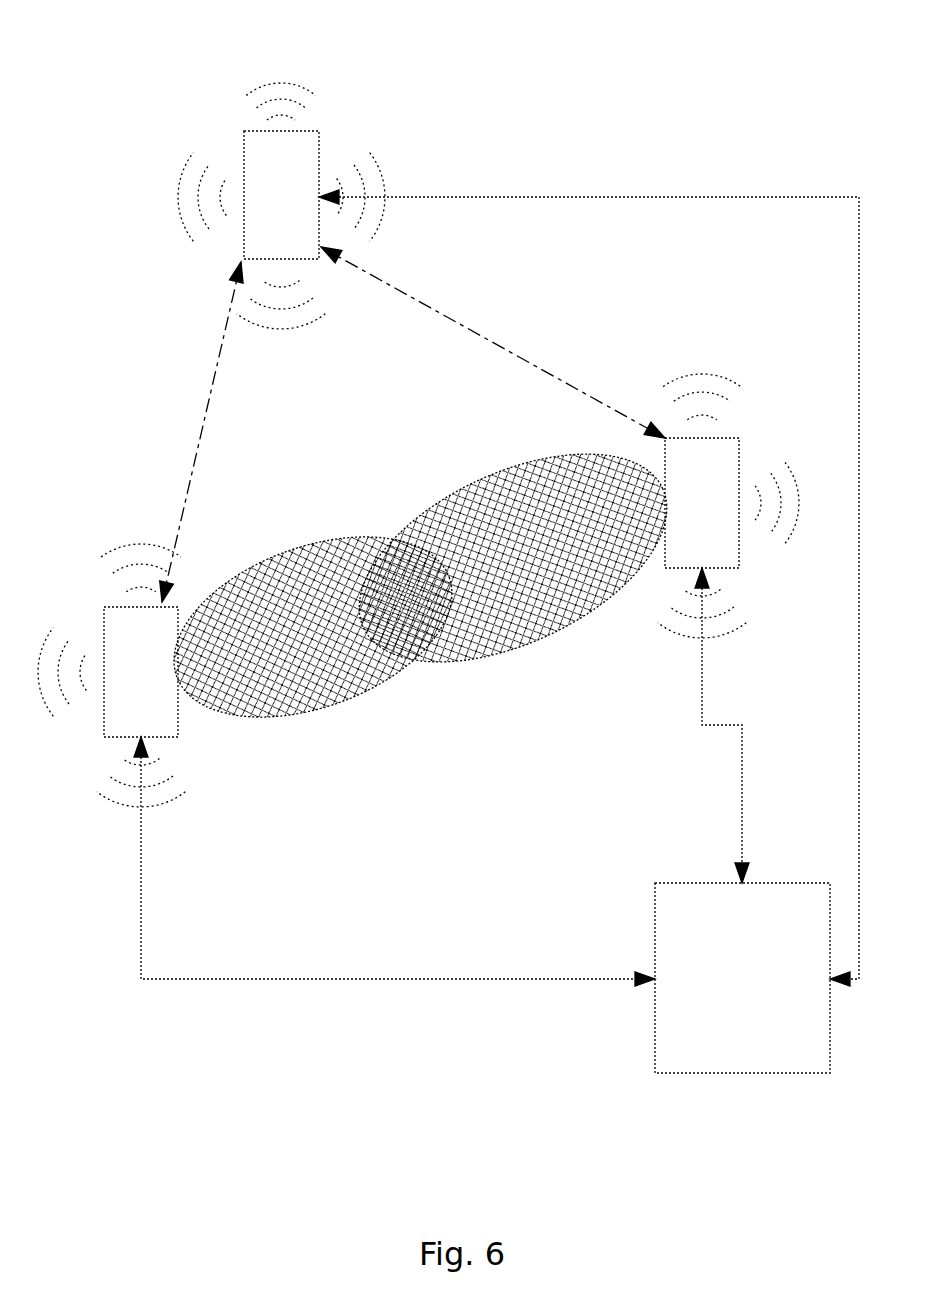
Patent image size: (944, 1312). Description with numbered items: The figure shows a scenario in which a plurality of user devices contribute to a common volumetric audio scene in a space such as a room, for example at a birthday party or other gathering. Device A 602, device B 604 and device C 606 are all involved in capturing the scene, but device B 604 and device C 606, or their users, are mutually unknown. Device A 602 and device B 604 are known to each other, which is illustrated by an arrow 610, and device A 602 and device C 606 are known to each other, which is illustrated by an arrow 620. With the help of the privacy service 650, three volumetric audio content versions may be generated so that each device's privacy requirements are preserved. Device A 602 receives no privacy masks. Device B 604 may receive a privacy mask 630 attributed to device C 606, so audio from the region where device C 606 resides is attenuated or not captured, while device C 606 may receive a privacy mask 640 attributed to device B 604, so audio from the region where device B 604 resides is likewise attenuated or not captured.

The device A 602 is at (258, 170).
The device B 604 is at (118, 646).
The device C 606 is at (679, 477).
The arrow 610 is at (213, 392).
The arrow 620 is at (503, 340).
The privacy mask 630 is at (355, 710).
The privacy mask 640 is at (567, 617).
The privacy service 650 is at (692, 1045).